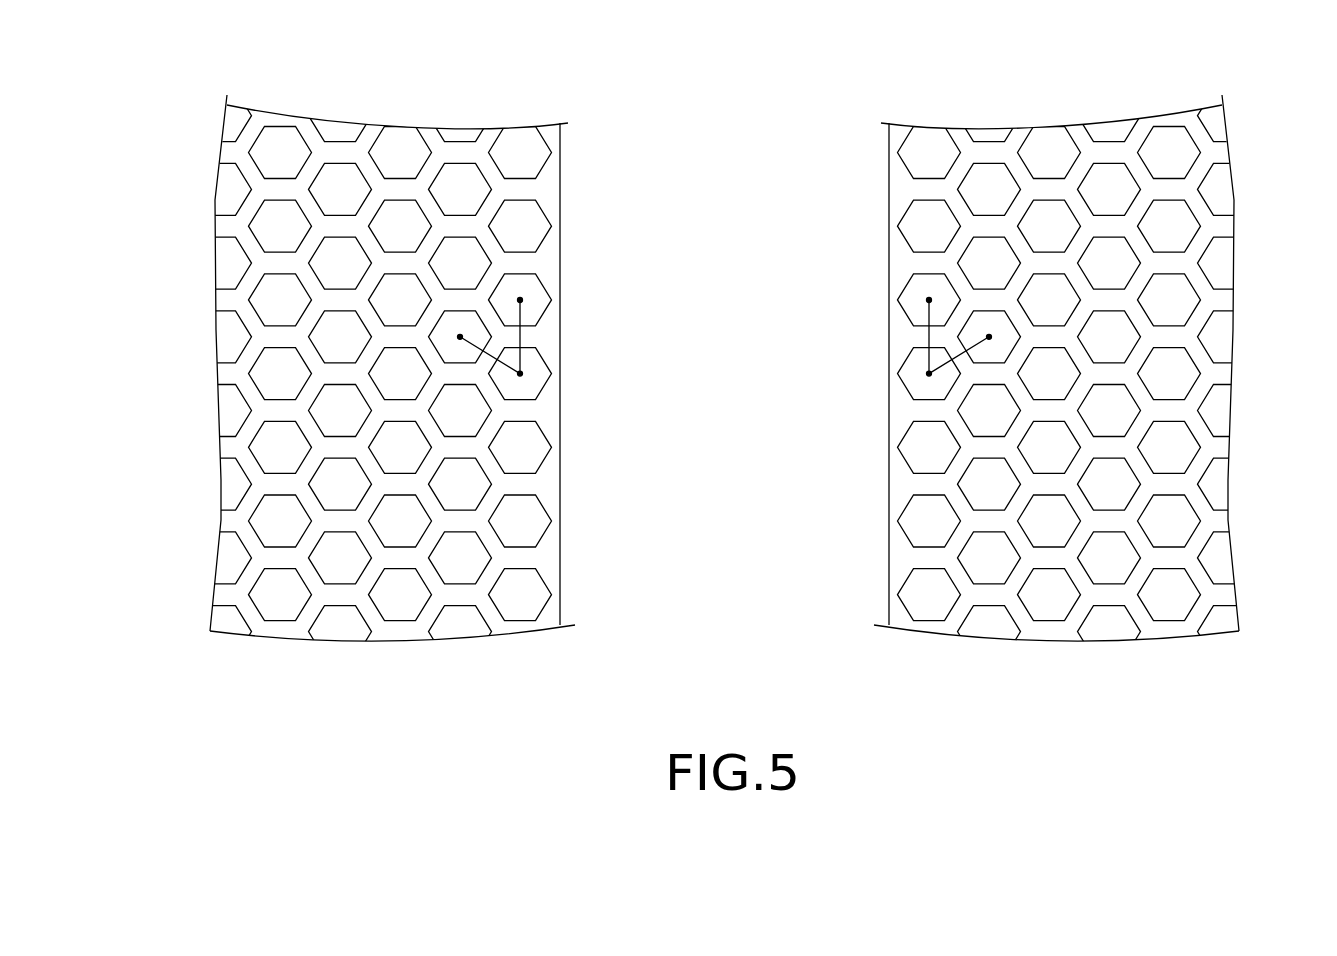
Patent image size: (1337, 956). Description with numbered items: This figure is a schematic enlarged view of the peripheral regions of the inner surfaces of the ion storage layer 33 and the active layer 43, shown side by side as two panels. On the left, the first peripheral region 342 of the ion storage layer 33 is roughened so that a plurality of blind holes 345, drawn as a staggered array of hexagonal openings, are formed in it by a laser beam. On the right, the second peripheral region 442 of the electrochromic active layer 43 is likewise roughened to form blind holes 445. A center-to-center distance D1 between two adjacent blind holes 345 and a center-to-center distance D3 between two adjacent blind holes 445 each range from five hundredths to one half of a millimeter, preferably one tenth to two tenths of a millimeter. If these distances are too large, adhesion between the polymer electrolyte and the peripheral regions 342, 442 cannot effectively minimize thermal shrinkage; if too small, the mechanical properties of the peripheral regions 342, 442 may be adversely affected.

The ion storage layer 33 is at (379, 344).
The first peripheral region 342 is at (279, 118).
The blind holes 345 is at (275, 238).
The center-to-center distance D1 is at (520, 339).
The active layer 43 is at (1072, 335).
The second peripheral region 442 is at (988, 157).
The blind holes 445 is at (1168, 240).
The center-to-center distance D3 is at (929, 338).